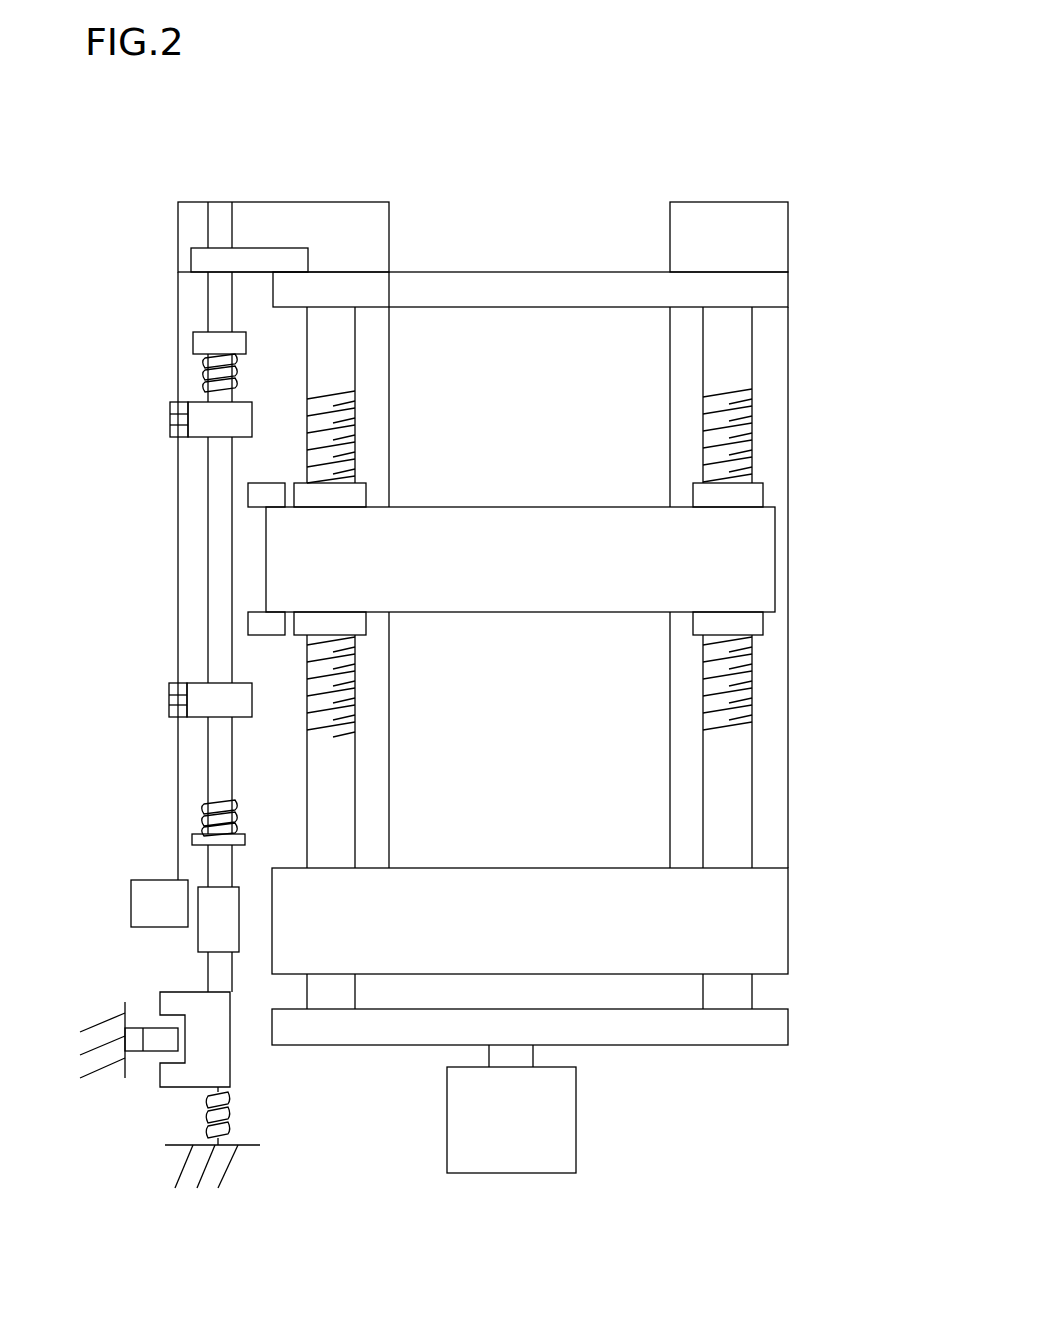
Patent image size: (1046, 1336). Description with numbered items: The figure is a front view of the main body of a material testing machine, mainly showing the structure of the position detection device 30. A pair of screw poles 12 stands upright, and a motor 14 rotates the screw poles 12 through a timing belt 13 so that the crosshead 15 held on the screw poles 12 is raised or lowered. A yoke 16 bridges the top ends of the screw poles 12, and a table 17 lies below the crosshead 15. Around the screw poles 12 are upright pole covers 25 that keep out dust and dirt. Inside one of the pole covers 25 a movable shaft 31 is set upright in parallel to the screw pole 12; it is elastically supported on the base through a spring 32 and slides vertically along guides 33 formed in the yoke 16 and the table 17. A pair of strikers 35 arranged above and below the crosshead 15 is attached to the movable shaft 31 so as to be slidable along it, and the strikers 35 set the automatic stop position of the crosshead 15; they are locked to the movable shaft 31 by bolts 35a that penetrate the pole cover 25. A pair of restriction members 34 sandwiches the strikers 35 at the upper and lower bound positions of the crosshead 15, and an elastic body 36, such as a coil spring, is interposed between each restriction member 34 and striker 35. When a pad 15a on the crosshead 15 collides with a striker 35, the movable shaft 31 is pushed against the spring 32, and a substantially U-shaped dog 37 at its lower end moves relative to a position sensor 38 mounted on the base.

The screw pole 12 is at (752, 348).
The timing belt 13 is at (662, 1045).
The motor 14 is at (522, 1173).
The crosshead 15 is at (535, 507).
The pad 15a is at (265, 483).
The yoke 16 is at (513, 272).
The table 17 is at (787, 915).
The pole cover 25 is at (313, 202).
The position detection device 30 is at (199, 174).
The movable shaft 31 is at (207, 585).
The spring 32 is at (237, 1115).
The guide 33 is at (192, 255).
The restriction member 34 is at (118, 845).
The striker 35 is at (262, 743).
The bolt 35a is at (168, 408).
The elastic body 36 is at (203, 373).
The dog 37 is at (168, 1087).
The position sensor 38 is at (111, 1021).